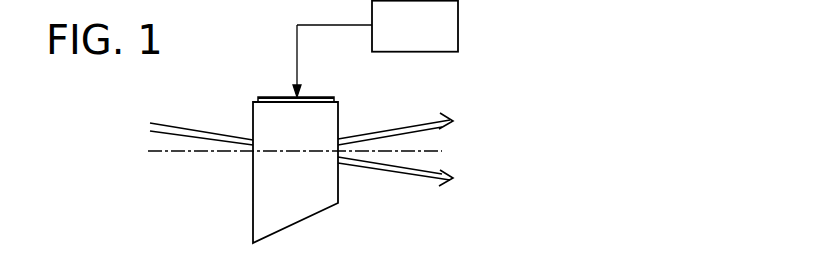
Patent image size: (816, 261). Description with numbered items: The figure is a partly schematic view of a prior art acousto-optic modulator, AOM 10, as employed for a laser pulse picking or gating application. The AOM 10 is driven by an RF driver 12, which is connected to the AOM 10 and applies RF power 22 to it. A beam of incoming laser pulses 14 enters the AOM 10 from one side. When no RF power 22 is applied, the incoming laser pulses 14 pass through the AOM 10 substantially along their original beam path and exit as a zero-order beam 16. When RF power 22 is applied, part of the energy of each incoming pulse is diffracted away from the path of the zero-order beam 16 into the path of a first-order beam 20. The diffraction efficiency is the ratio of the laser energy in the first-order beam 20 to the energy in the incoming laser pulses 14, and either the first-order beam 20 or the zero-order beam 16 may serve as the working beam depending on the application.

The AOM 10 is at (340, 118).
The RF driver 12 is at (458, 25).
The incoming laser pulses 14 is at (208, 132).
The zero-order beam 16 is at (392, 173).
The first-order beam 20 is at (407, 123).
The RF power 22 is at (297, 52).